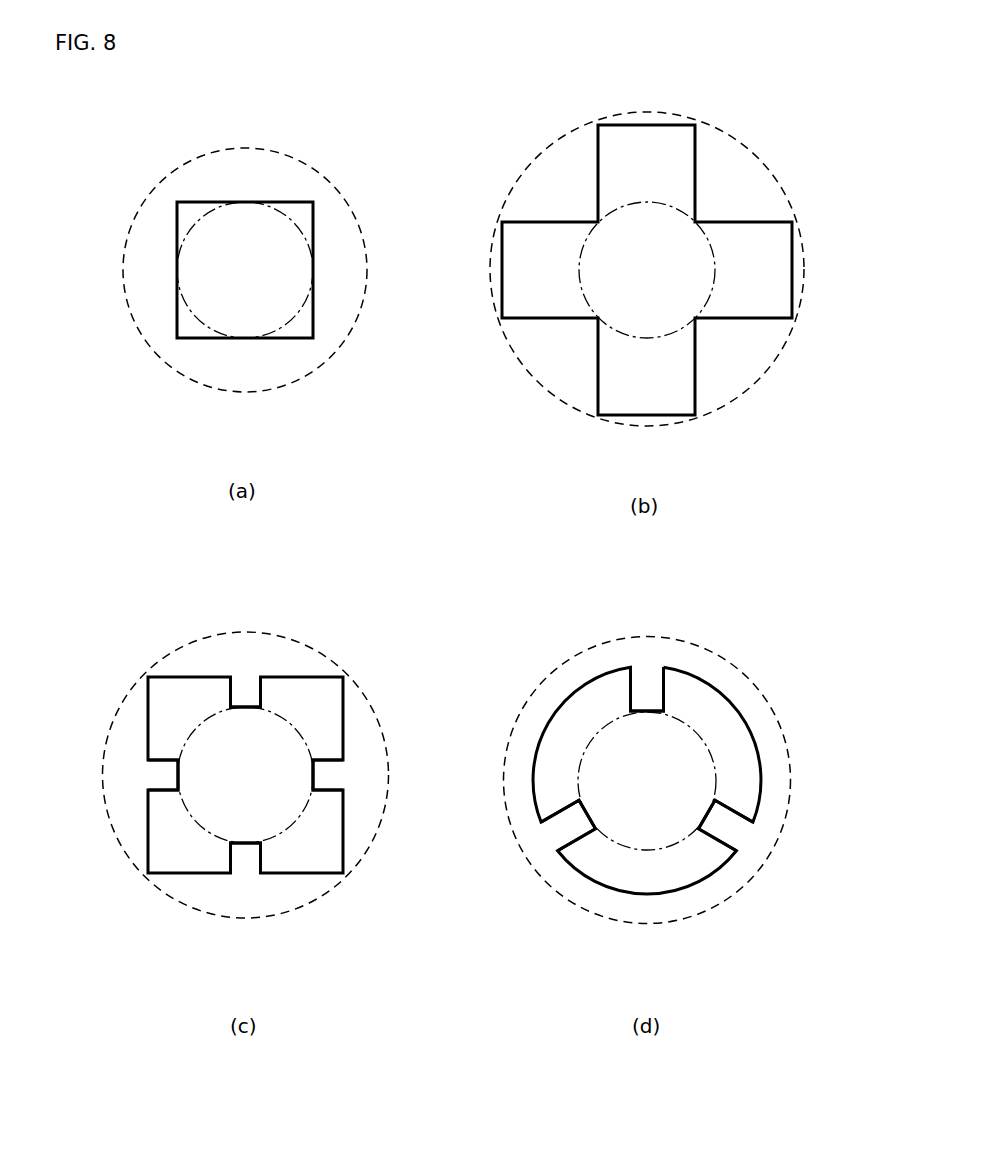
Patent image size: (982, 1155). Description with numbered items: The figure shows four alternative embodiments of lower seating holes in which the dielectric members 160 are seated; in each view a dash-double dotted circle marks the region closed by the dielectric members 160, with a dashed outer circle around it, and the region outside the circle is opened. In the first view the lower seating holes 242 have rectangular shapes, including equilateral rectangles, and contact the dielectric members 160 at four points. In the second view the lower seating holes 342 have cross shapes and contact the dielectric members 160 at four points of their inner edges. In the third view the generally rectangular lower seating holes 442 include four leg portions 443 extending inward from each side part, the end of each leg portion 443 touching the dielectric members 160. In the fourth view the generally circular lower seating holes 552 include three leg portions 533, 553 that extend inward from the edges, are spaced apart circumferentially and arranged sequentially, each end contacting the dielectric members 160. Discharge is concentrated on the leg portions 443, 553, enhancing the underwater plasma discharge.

The dielectric member 160 is at (263, 148).
The lower seating hole 242 is at (192, 210).
The lower seating hole 342 is at (755, 228).
The lower seating hole 442 is at (192, 685).
The leg portion 443 is at (247, 682).
The lower seating hole 552 is at (718, 697).
The leg portion 533 is at (647, 680).
The leg portion 553 is at (558, 830).